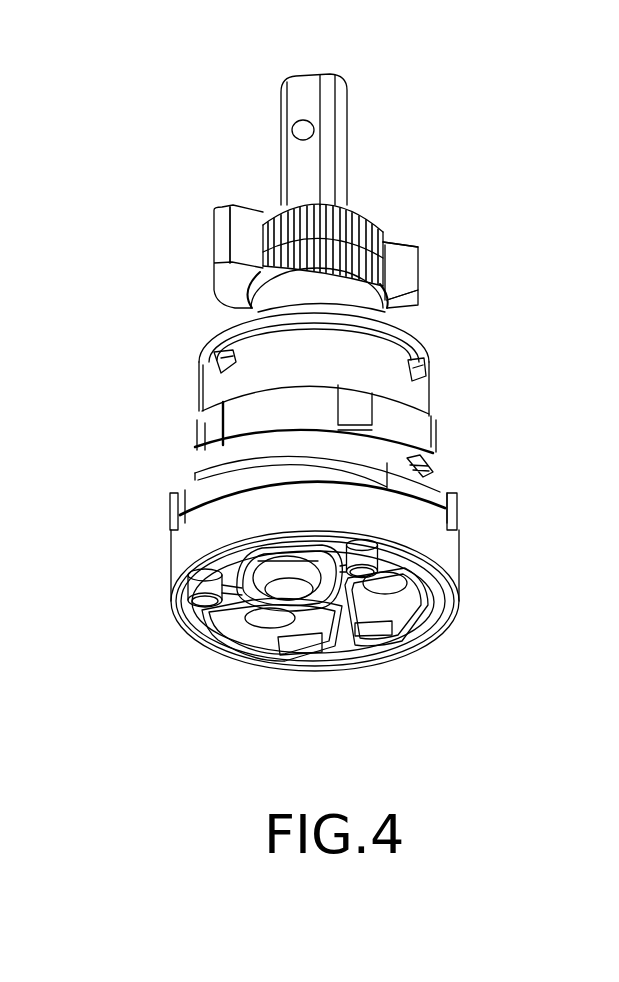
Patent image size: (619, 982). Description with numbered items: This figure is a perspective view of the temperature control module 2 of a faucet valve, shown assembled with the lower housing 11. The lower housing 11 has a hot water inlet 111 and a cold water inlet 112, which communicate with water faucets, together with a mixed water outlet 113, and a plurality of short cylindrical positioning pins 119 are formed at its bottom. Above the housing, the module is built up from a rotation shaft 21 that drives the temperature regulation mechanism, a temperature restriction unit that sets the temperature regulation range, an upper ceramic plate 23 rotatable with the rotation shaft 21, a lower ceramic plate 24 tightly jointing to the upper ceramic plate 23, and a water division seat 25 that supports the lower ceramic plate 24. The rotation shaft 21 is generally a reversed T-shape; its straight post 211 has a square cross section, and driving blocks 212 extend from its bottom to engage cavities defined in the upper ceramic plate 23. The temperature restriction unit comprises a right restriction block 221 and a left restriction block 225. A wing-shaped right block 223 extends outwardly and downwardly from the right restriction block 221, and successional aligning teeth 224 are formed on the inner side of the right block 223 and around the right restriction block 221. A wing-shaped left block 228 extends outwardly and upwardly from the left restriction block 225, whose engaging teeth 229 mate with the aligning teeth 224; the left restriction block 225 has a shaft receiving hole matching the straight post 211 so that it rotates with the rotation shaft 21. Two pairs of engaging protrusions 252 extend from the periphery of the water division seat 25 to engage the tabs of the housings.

The temperature control module 2 is at (560, 180).
The lower housing 11 is at (465, 562).
The hot water inlet 111 is at (270, 627).
The cold water inlet 112 is at (377, 607).
The mixed water outlet 113 is at (237, 567).
The positioning pins 119 is at (203, 602).
The rotation shaft 21 is at (430, 347).
The straight post 211 is at (342, 127).
The driving blocks 212 is at (220, 362).
The right restriction block 221 is at (212, 208).
The right block 223 is at (237, 218).
The aligning teeth 224 is at (362, 215).
The left restriction block 225 is at (410, 240).
The left block 228 is at (402, 298).
The engaging teeth 229 is at (385, 264).
The upper ceramic plate 23 is at (207, 400).
The lower ceramic plate 24 is at (430, 430).
The water division seat 25 is at (452, 480).
The engaging protrusions 252 is at (430, 460).